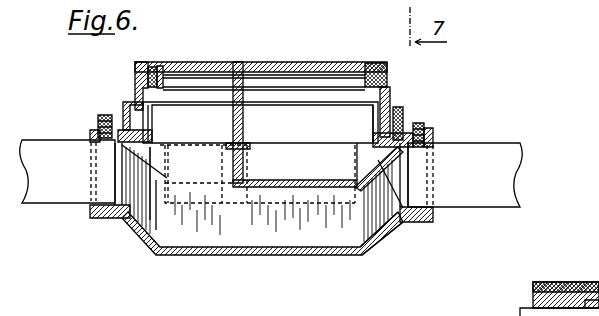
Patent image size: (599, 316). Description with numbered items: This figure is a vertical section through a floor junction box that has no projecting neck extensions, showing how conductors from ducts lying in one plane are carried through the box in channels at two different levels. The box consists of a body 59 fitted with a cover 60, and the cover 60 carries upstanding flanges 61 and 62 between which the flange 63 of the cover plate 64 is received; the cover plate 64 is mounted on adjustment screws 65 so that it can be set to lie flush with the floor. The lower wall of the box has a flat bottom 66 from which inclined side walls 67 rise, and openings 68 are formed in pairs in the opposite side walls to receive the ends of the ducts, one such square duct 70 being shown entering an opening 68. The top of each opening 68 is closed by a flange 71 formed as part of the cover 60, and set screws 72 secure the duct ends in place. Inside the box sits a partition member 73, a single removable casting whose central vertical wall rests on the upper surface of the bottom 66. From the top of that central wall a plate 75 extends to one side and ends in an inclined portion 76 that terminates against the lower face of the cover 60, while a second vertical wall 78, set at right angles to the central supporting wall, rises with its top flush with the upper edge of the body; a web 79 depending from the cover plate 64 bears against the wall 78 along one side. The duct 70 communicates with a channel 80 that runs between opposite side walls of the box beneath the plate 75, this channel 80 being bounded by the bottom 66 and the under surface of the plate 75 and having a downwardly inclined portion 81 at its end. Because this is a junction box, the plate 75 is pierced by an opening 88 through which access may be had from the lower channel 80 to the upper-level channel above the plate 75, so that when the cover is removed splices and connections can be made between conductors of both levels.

The body 59 is at (117, 235).
The cover 60 is at (123, 112).
The upstanding flange 61 is at (372, 110).
The upstanding flange 62 is at (398, 103).
The flange of the cover plate 63 is at (135, 92).
The cover plate 64 is at (258, 62).
The adjustment screws 65 is at (402, 115).
The flat bottom 66 is at (282, 255).
The inclined side walls 67 is at (382, 237).
The openings 68 is at (277, 150).
The duct 70 is at (490, 157).
The flange 71 is at (428, 128).
The set screws 72 is at (415, 125).
The partition member 73 is at (232, 190).
The plate 75 is at (335, 175).
The inclined portion 76 is at (398, 220).
The vertical wall 78 is at (225, 150).
The web 79 is at (235, 97).
The channels 80 is at (188, 230).
The downwardly inclined portions 81 is at (143, 232).
The opening 88 is at (192, 163).